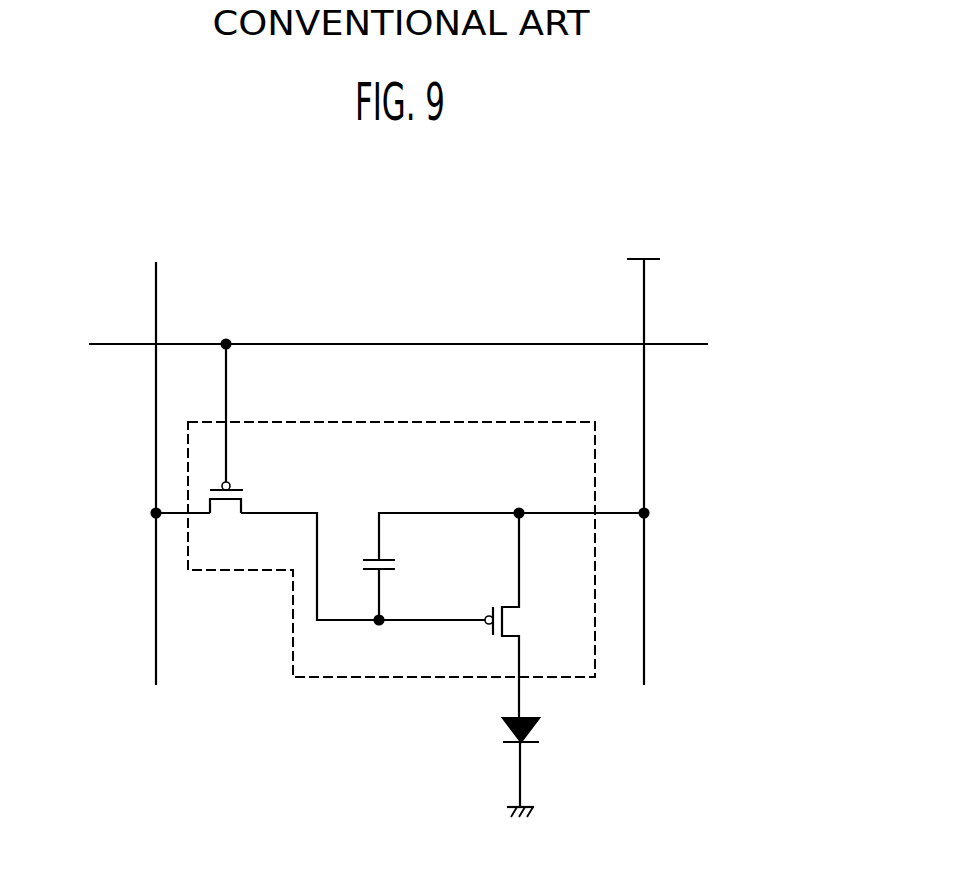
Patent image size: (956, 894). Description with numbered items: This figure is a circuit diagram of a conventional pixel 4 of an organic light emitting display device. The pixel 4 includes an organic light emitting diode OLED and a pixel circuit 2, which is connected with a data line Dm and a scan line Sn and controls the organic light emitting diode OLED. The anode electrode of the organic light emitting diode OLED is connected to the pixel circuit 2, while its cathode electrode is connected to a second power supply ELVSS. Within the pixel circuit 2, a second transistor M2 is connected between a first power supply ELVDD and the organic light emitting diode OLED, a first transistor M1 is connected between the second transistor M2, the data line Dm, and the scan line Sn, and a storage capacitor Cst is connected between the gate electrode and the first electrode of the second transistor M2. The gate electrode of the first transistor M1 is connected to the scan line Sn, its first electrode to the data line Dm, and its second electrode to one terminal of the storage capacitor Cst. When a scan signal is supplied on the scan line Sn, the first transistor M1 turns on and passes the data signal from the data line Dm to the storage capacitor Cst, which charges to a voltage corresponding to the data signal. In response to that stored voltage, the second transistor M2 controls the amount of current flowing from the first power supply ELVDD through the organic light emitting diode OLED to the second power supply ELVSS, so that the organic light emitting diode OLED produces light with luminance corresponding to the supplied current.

The pixel 4 is at (340, 260).
The pixel circuit 2 is at (390, 420).
The scan line Sn is at (123, 345).
The data line Dm is at (156, 289).
The first power supply ELVDD is at (643, 458).
The second power supply ELVSS is at (556, 814).
The first transistor M1 is at (319, 480).
The second transistor M2 is at (520, 615).
The storage capacitor Cst is at (506, 567).
The organic light emitting diode OLED is at (556, 762).